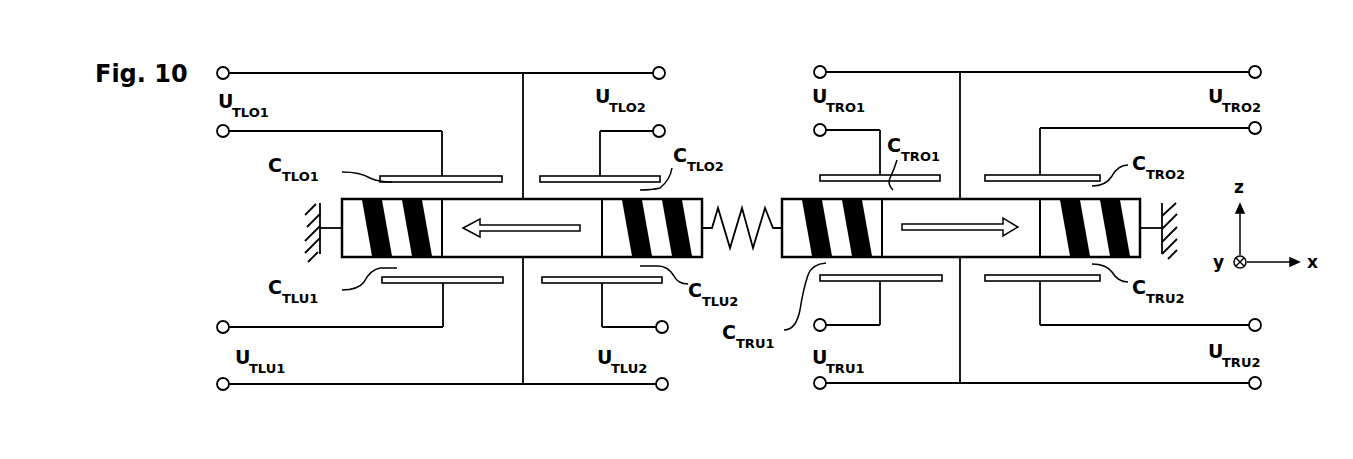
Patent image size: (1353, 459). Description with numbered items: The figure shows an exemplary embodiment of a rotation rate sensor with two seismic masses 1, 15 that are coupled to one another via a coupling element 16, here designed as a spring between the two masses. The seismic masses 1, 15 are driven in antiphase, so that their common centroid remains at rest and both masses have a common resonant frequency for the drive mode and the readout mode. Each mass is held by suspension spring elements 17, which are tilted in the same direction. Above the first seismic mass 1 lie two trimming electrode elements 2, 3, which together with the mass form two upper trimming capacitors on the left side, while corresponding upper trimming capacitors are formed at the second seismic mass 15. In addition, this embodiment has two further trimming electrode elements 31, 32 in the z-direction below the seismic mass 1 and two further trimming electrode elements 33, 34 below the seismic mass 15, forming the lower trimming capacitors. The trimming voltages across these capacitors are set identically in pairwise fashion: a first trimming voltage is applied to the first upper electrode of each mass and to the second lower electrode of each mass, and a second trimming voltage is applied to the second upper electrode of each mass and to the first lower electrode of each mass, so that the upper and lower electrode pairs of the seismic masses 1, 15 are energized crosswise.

The seismic mass 1 is at (508, 199).
The seismic mass 15 is at (974, 199).
The coupling element 16 is at (758, 212).
The suspension spring elements 17 is at (428, 218).
The trimming electrode element 2 is at (465, 176).
The trimming electrode element 3 is at (563, 176).
The trimming electrode element 31 is at (460, 284).
The trimming electrode element 32 is at (554, 284).
The trimming electrode element 33 is at (912, 282).
The trimming electrode element 34 is at (1002, 282).